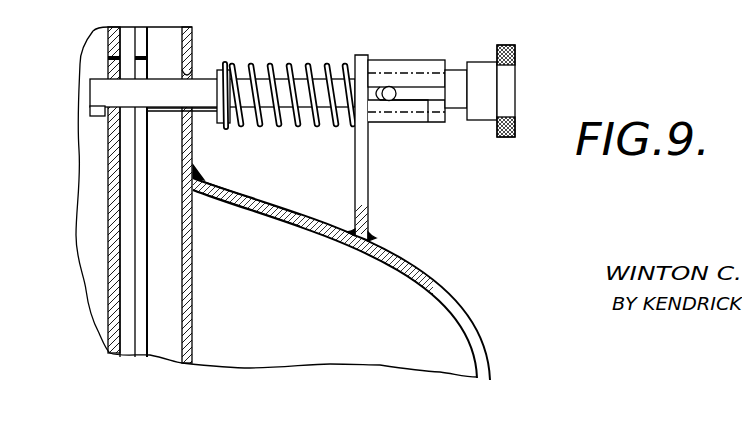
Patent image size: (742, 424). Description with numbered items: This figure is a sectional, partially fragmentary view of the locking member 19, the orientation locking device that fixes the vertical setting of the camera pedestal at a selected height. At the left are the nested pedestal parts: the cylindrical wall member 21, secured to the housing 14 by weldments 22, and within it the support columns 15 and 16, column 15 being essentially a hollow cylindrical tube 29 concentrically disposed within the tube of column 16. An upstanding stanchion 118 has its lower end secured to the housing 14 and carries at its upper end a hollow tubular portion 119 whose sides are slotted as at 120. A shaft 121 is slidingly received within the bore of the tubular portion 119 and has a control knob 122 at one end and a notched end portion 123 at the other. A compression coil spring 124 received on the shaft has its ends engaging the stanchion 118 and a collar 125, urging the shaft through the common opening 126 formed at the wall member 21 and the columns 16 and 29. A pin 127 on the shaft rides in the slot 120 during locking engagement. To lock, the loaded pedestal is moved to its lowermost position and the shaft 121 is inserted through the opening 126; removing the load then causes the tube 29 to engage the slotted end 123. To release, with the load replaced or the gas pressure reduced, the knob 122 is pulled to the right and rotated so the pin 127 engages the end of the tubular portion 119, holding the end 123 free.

The housing 14 is at (462, 298).
The support column 15 is at (108, 257).
The support column 16 is at (147, 306).
The locking member 19 is at (569, 85).
The cylindrical wall member 21 is at (193, 250).
The weldments 22 is at (200, 170).
The hollow cylindrical tube 29 is at (115, 333).
The stanchion 118 is at (368, 192).
The hollow tubular portion 119 is at (428, 62).
The slot 120 is at (422, 96).
The shaft 121 is at (204, 112).
The control knob 122 is at (510, 63).
The notched end portion 123 is at (130, 106).
The compression coil spring 124 is at (304, 69).
The collar 125 is at (226, 62).
The common opening 126 is at (195, 76).
The pin 127 is at (389, 86).